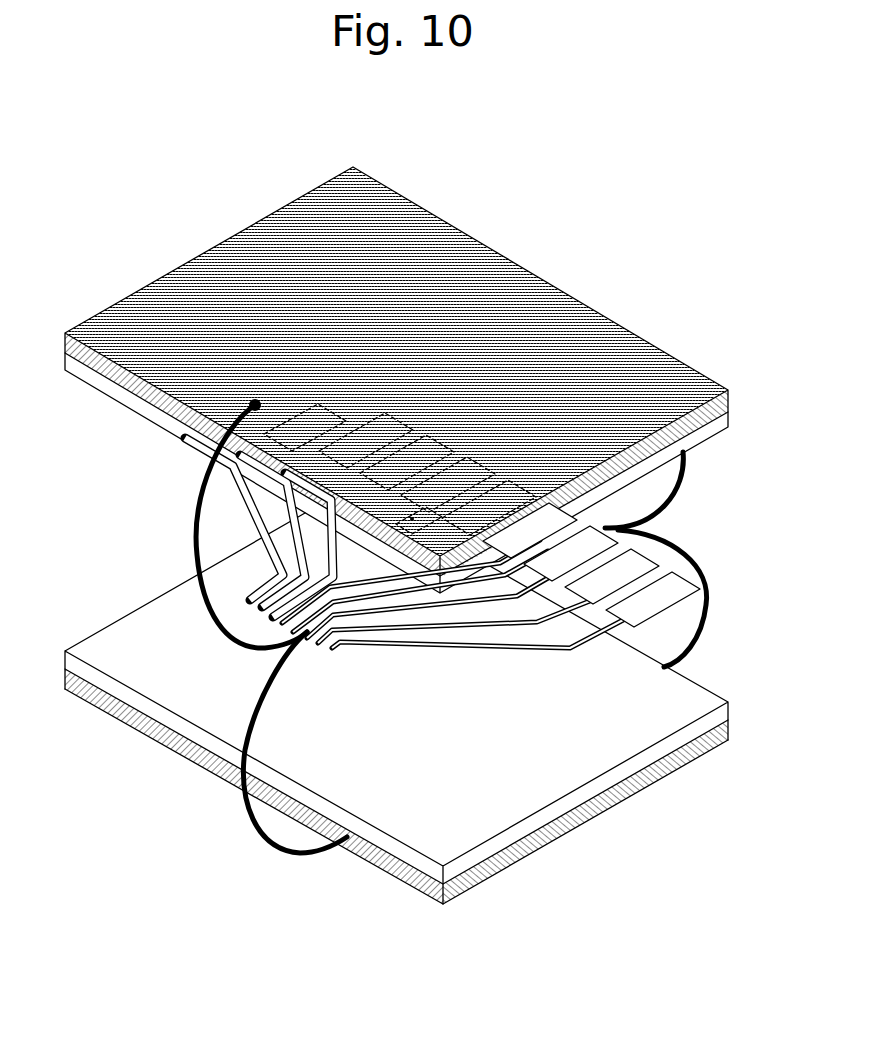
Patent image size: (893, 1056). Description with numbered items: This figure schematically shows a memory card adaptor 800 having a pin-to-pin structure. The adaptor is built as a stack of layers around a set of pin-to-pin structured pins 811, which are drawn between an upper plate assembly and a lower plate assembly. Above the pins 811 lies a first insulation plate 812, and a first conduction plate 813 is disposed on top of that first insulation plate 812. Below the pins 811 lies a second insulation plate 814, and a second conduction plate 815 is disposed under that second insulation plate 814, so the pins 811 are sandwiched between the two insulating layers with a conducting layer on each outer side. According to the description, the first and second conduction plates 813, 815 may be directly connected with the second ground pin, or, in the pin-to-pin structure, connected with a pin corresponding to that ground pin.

The memory card adaptor 800 is at (676, 126).
The pins 811 is at (595, 671).
The first insulation plate 812 is at (631, 333).
The first conduction plate 813 is at (731, 399).
The second insulation plate 814 is at (731, 712).
The second conduction plate 815 is at (724, 731).